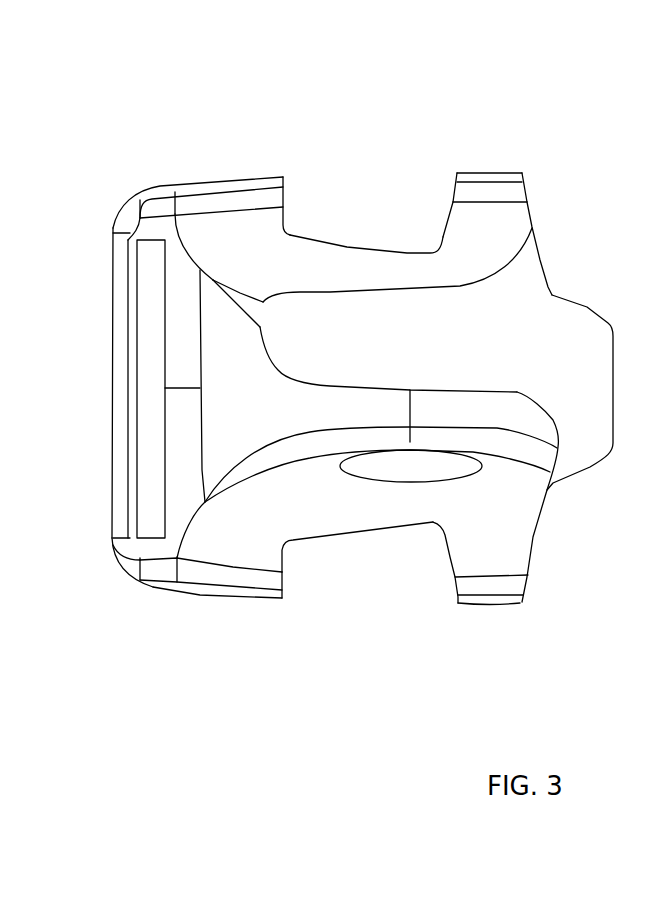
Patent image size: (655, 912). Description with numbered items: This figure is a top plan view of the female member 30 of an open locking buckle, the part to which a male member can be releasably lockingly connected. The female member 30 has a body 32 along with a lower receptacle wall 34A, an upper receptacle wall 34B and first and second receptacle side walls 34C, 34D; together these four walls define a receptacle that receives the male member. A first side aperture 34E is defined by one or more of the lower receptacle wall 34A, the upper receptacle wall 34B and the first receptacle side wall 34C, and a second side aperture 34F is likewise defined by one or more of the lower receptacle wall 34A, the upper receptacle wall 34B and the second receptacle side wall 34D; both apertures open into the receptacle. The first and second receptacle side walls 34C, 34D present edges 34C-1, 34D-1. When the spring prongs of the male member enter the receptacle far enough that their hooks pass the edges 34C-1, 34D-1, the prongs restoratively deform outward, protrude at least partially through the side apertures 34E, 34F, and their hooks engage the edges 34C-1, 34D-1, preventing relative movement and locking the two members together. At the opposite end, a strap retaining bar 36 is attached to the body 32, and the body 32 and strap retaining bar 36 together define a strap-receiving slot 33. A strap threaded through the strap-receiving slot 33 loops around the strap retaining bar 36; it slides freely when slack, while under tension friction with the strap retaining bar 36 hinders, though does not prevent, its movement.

The female member 30 is at (187, 128).
The body 32 is at (238, 578).
The strap-receiving slot 33 is at (145, 472).
The strap retaining bar 36 is at (110, 390).
The lower receptacle wall 34A is at (547, 307).
The upper receptacle wall 34B is at (510, 537).
The first receptacle side wall 34C is at (483, 172).
The edge 34C-1 is at (457, 172).
The second receptacle side wall 34D is at (488, 603).
The edge 34D-1 is at (458, 603).
The first side aperture 34E is at (333, 211).
The second side aperture 34F is at (320, 583).